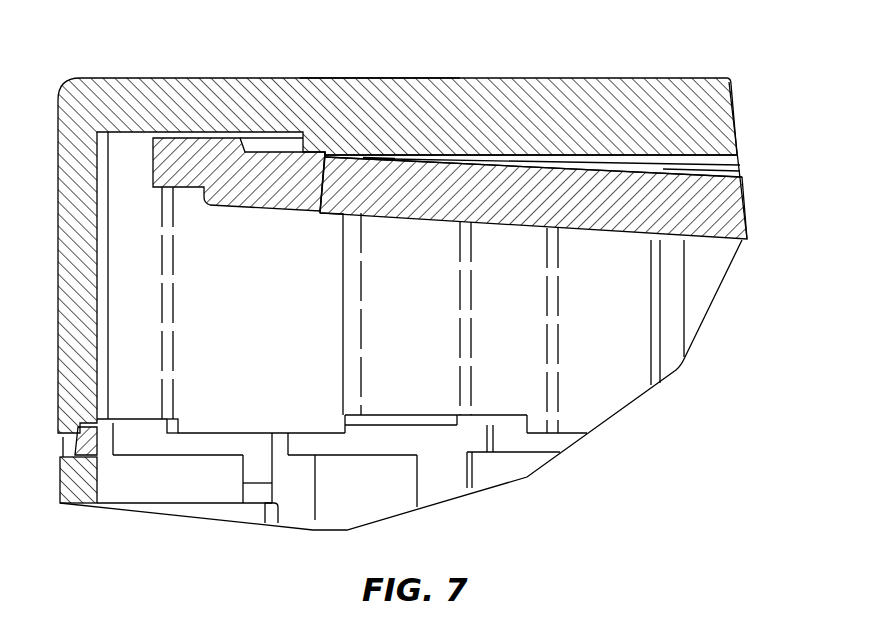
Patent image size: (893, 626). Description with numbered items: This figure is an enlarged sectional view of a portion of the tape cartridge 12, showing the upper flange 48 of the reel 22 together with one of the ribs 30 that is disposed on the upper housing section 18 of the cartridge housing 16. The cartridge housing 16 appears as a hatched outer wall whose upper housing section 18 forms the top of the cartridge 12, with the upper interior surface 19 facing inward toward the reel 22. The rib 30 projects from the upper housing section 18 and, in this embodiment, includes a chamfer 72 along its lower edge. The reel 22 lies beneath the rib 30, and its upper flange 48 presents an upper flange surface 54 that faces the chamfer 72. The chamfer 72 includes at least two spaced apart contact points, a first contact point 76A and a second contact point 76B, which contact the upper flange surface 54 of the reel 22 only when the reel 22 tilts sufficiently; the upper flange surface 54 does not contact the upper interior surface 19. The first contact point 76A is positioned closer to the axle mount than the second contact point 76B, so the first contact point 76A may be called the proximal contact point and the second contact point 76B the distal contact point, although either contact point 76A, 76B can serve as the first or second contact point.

The cartridge 12 is at (138, 521).
The cartridge housing 16 is at (133, 90).
The upper housing section 18 is at (358, 87).
The upper interior surface 19 is at (225, 134).
The reel 22 is at (580, 186).
The rib 30 is at (400, 153).
The upper flange 48 is at (658, 178).
The upper flange surface 54 is at (453, 155).
The chamfer 72 is at (338, 152).
The first contact point 76A is at (372, 157).
The second contact point 76B is at (320, 213).